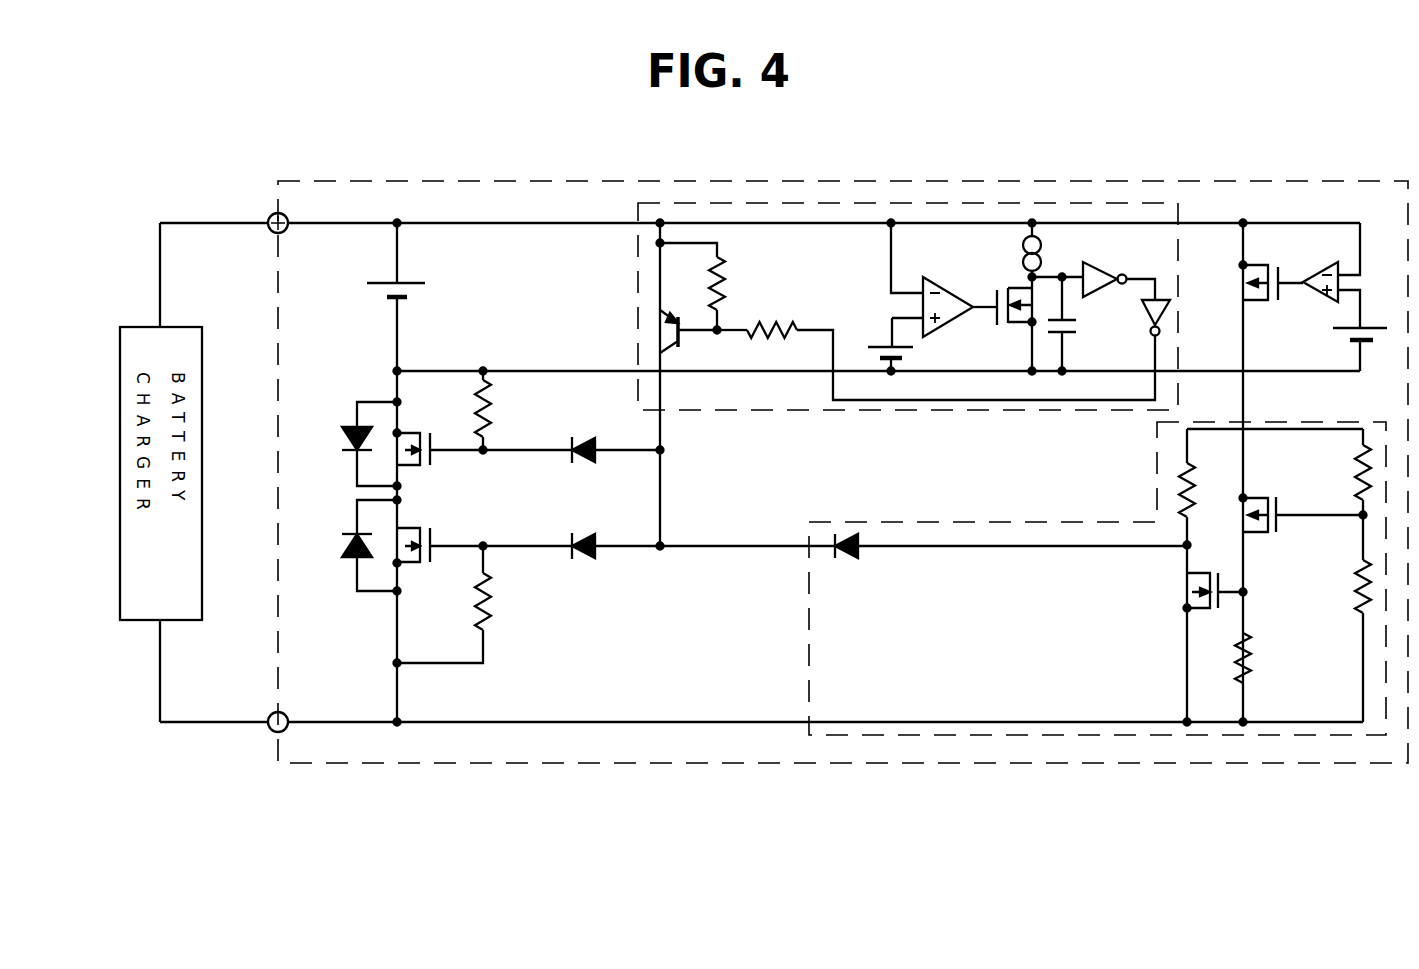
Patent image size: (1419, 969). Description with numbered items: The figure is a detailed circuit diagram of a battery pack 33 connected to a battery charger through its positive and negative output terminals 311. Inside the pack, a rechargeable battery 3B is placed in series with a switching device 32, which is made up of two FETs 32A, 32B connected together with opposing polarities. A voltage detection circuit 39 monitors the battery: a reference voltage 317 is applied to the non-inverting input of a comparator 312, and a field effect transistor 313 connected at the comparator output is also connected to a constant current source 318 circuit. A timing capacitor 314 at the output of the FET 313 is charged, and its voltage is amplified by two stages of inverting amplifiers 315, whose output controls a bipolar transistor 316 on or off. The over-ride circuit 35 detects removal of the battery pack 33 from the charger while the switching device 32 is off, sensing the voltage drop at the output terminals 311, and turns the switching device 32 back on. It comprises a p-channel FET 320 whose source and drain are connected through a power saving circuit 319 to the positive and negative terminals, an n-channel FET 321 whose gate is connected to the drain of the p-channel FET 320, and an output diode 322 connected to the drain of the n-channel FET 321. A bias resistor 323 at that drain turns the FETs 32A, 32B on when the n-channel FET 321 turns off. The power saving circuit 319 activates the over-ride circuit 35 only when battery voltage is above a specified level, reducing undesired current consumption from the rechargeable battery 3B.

The output terminals 311 is at (270, 215).
The rechargeable battery 3B is at (371, 291).
The FET 32B is at (368, 400).
The FET 32A is at (357, 592).
The switching device 32 is at (420, 492).
The battery pack 33 is at (583, 763).
The voltage detection circuit 39 is at (762, 203).
The bipolar transistor 316 is at (668, 323).
The reference voltage 317 is at (872, 347).
The comparator 312 is at (958, 266).
The field effect transistor 313 is at (1010, 323).
The timing capacitor 314 is at (1070, 328).
The inverting amplifiers 315 is at (1148, 277).
The constant current source 318 is at (1030, 222).
The power saving circuit 319 is at (1292, 214).
The over-ride circuit 35 is at (1280, 422).
The p-channel FET 320 is at (1255, 533).
The n-channel FET 321 is at (1202, 610).
The output diode 322 is at (855, 560).
The bias resistor 323 is at (1165, 492).